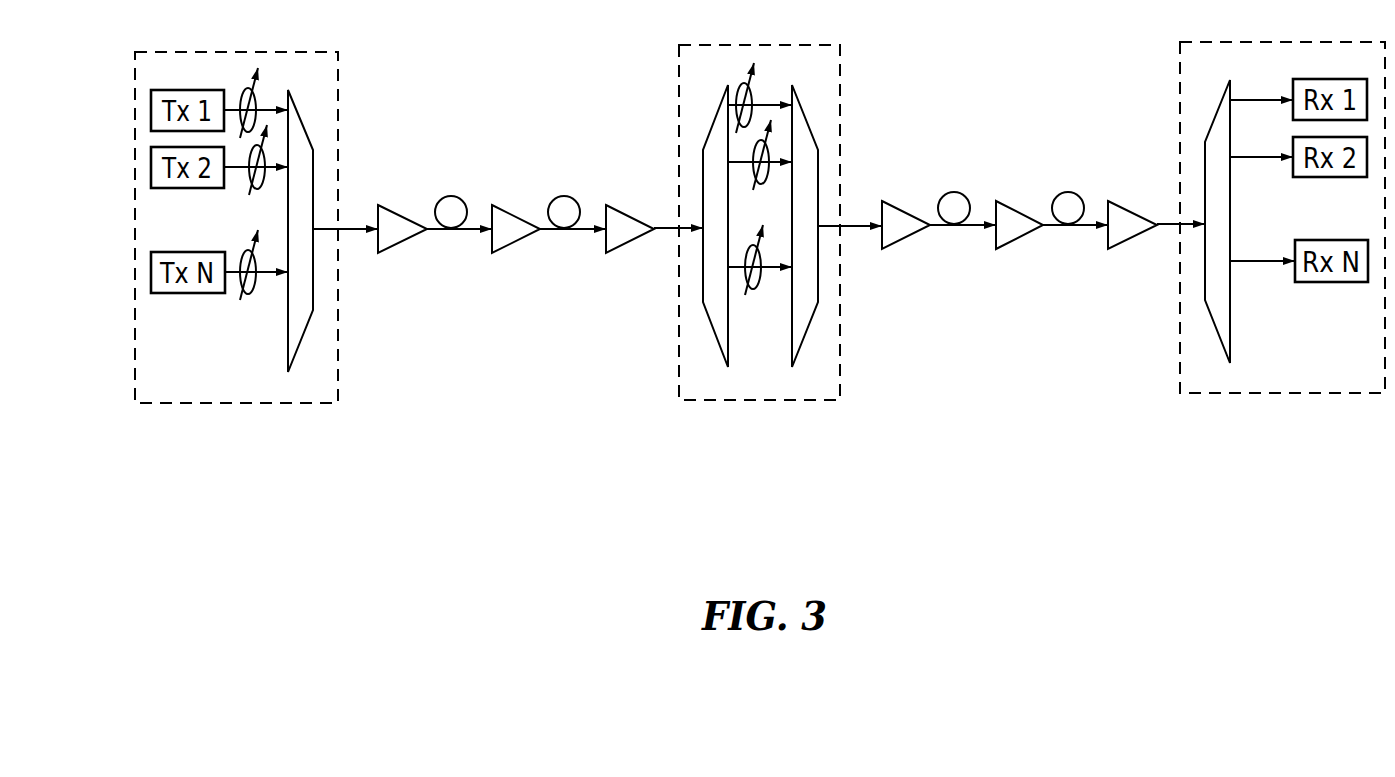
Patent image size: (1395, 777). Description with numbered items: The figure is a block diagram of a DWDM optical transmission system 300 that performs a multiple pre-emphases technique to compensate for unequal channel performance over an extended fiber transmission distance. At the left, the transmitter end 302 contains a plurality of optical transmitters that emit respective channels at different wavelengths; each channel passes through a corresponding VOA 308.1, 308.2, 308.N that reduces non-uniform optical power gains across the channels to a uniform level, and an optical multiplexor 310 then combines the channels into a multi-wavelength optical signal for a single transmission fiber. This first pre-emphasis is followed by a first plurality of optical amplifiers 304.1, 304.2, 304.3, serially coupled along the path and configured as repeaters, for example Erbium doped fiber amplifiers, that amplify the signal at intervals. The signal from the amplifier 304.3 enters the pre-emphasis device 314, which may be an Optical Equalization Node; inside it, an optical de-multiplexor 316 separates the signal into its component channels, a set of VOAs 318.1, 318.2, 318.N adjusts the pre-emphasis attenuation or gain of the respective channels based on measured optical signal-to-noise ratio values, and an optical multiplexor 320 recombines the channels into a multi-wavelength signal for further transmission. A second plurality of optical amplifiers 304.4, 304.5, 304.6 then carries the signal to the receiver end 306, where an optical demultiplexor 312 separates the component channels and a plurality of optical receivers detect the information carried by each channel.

The DWDM optical transmission system 300 is at (452, 398).
The transmitter end 302 is at (260, 404).
The optical amplifier 304.1 is at (402, 215).
The optical amplifier 304.2 is at (515, 245).
The optical amplifier 304.3 is at (628, 245).
The optical amplifier 304.4 is at (905, 212).
The optical amplifier 304.5 is at (1017, 245).
The optical amplifier 304.6 is at (1130, 245).
The receiver end 306 is at (1262, 394).
The VOA 308.1 is at (243, 95).
The VOA 308.2 is at (252, 185).
The VOA 308.N is at (246, 290).
The optical multiplexor 310 is at (288, 336).
The optical demultiplexor 312 is at (1232, 328).
The pre-emphasis device 314 is at (760, 401).
The optical de-multiplexor 316 is at (720, 344).
The VOA 318.1 is at (752, 95).
The VOA 318.2 is at (753, 157).
The VOA 318.N is at (748, 282).
The optical multiplexor 320 is at (805, 344).